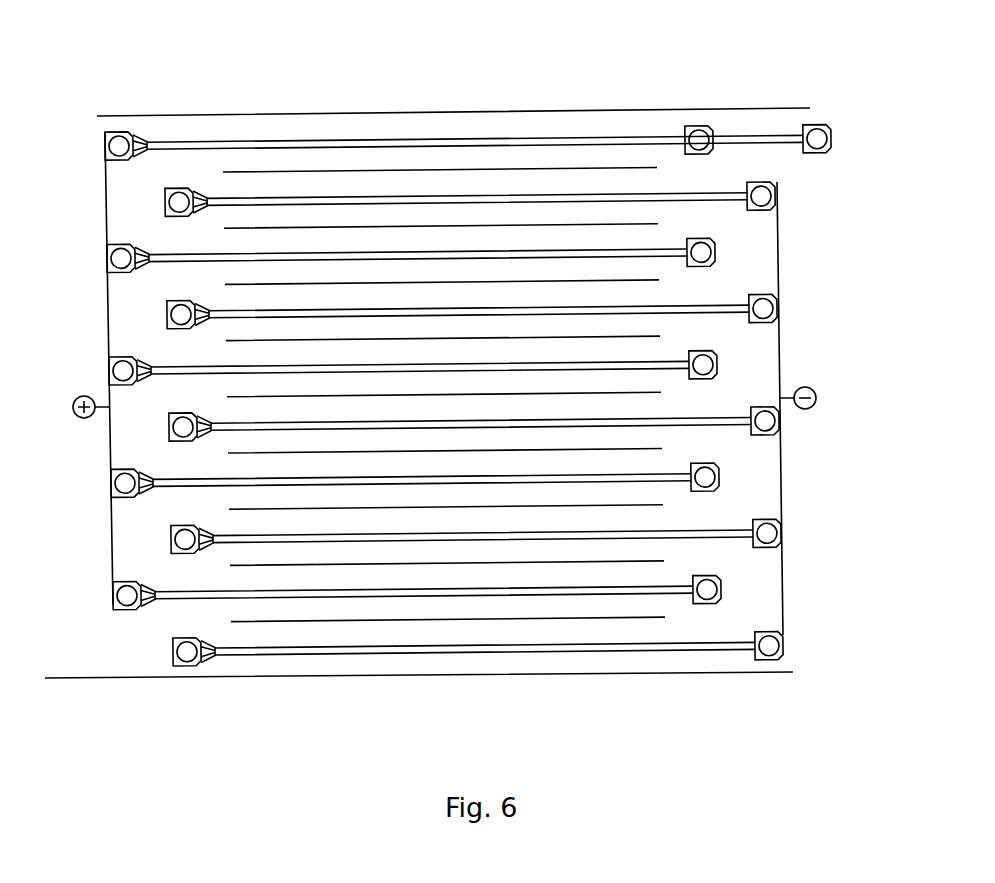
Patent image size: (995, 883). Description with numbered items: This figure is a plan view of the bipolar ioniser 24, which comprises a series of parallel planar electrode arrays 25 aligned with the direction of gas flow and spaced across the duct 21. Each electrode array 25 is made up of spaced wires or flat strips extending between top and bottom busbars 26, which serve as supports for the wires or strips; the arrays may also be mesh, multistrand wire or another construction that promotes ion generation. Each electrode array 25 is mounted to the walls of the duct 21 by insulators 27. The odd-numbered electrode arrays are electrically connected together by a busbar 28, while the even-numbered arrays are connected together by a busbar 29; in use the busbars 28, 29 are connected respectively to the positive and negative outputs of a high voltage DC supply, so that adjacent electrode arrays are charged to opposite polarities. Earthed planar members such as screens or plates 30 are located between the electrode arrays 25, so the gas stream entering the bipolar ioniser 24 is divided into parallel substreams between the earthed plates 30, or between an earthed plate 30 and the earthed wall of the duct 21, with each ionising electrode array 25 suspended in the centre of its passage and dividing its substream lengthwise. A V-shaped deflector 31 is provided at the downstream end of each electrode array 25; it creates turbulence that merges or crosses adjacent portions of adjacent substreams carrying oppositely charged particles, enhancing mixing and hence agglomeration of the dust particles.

The duct 21 is at (258, 113).
The bipolar ioniser 24 is at (487, 358).
The electrode array 25 is at (366, 137).
The busbar 26 is at (475, 145).
The insulator 27 is at (117, 133).
The busbar 28 is at (112, 528).
The busbar 29 is at (783, 577).
The earthed plate 30 is at (560, 227).
The V-shaped deflector 31 is at (143, 135).